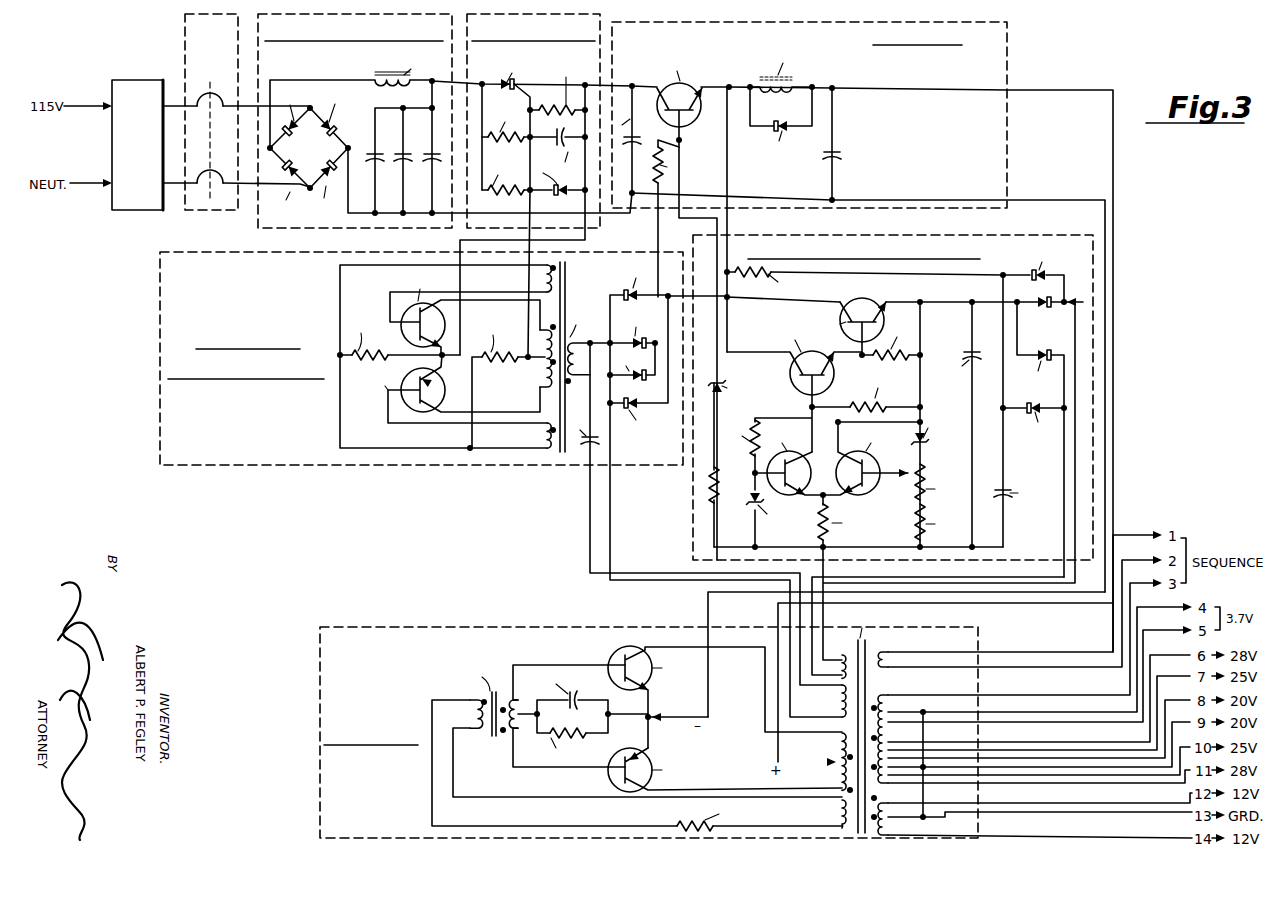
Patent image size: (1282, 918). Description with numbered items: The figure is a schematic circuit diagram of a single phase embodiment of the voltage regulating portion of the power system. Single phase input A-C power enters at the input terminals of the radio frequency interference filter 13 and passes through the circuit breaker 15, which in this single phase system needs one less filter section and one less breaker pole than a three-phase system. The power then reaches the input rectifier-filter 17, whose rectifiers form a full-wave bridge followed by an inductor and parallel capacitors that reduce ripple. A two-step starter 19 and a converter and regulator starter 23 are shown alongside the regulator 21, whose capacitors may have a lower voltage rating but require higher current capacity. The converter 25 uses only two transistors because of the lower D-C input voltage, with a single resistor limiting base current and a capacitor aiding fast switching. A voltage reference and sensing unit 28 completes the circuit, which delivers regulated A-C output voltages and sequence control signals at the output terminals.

The radio frequency interference filter 13 is at (114, 211).
The circuit breaker 15 is at (213, 211).
The input rectifier-filter 17 is at (283, 228).
The 2-step starter 19 is at (599, 228).
The regulator 21 is at (1007, 50).
The converter and regulator starter 23 is at (160, 372).
The converter 25 is at (462, 627).
The voltage reference and sensing unit 28 is at (693, 528).